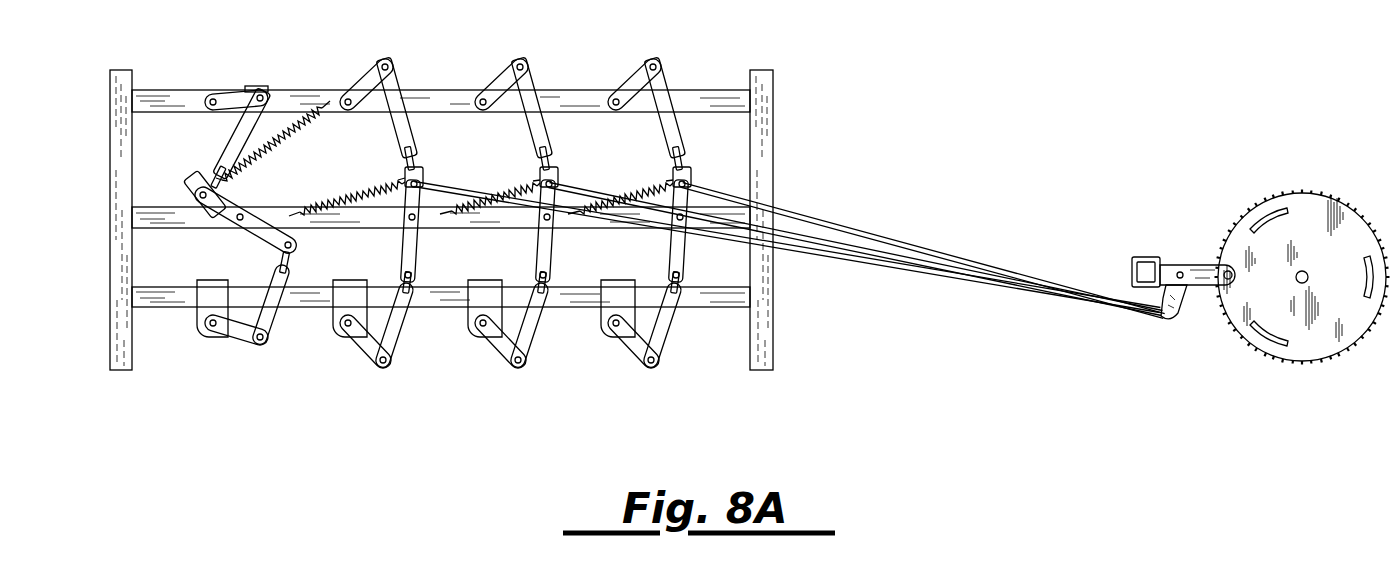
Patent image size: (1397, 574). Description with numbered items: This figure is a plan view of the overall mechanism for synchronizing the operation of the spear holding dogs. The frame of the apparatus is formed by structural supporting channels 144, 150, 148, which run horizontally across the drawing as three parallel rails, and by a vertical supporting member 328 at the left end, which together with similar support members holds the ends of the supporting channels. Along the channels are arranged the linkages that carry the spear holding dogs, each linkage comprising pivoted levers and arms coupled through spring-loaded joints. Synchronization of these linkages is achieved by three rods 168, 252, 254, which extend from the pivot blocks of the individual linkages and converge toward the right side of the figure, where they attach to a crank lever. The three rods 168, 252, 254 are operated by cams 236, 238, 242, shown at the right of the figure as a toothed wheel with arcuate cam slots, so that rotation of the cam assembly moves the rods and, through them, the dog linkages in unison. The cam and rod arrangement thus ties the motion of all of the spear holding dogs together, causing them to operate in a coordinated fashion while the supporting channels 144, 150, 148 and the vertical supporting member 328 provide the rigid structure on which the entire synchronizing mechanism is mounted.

The vertical supporting member 328 is at (110, 138).
The structural supporting channel 144 is at (161, 89).
The structural supporting channel 150 is at (154, 207).
The structural supporting channel 148 is at (158, 288).
The rod 168 is at (898, 272).
The rod 252 is at (868, 247).
The rod 254 is at (805, 213).
The cam 236 is at (1315, 193).
The cam 238 is at (1267, 353).
The cam 242 is at (1377, 310).